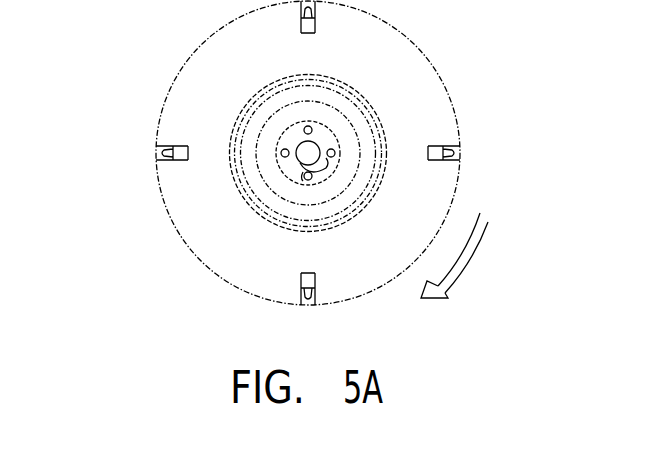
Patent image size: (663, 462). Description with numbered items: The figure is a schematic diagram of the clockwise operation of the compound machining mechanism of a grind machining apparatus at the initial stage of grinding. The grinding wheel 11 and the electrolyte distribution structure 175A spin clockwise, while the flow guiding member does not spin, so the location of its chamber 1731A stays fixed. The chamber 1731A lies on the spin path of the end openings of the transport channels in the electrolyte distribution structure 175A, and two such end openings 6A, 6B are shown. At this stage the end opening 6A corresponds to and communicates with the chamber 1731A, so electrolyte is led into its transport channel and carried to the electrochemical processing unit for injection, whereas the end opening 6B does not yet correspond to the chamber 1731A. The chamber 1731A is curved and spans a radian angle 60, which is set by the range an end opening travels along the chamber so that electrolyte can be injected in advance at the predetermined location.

The grinding wheel 11 is at (213, 72).
The electrolyte distribution structure 175A is at (280, 134).
The radian angle 60 is at (306, 155).
The chamber 1731A is at (302, 177).
The end opening 6A is at (310, 182).
The end opening 6B is at (334, 158).